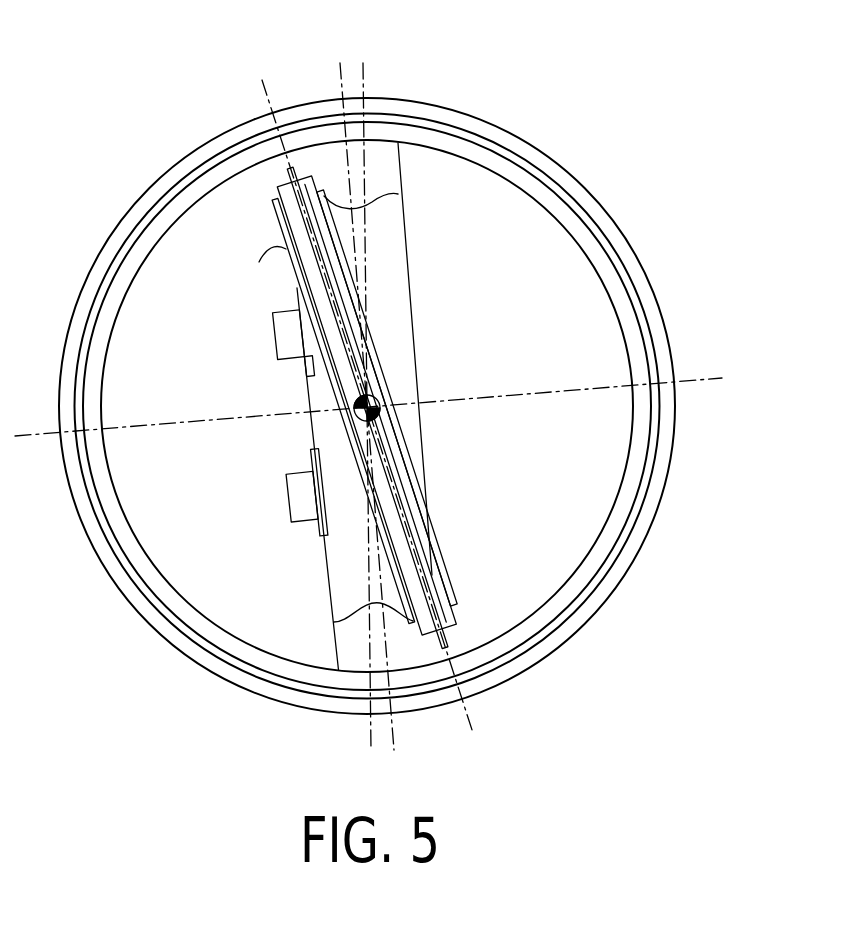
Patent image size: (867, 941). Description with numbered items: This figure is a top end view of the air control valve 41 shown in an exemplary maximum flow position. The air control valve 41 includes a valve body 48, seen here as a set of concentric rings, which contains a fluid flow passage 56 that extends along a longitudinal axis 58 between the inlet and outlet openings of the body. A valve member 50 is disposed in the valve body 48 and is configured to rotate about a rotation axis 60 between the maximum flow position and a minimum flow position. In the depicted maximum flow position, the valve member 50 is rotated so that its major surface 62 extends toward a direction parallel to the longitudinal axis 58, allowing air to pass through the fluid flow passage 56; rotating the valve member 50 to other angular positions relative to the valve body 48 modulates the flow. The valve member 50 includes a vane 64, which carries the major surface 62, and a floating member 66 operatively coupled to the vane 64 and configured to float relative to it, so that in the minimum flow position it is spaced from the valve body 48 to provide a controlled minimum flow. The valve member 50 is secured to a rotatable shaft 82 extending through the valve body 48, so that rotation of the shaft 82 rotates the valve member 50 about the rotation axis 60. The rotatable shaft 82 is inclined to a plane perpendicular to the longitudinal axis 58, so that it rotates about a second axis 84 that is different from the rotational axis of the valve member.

The air control valve 41 is at (122, 118).
The valve body 48 is at (100, 555).
The fluid flow passage 56 is at (226, 558).
The longitudinal axis 58 is at (356, 418).
The valve member 50 is at (371, 415).
The major surface 62 is at (286, 247).
The vane 64 is at (400, 468).
The floating member 66 is at (450, 638).
The rotatable shaft 82 is at (400, 264).
The second axis 84 is at (396, 740).
The rotation axis 60 is at (478, 729).